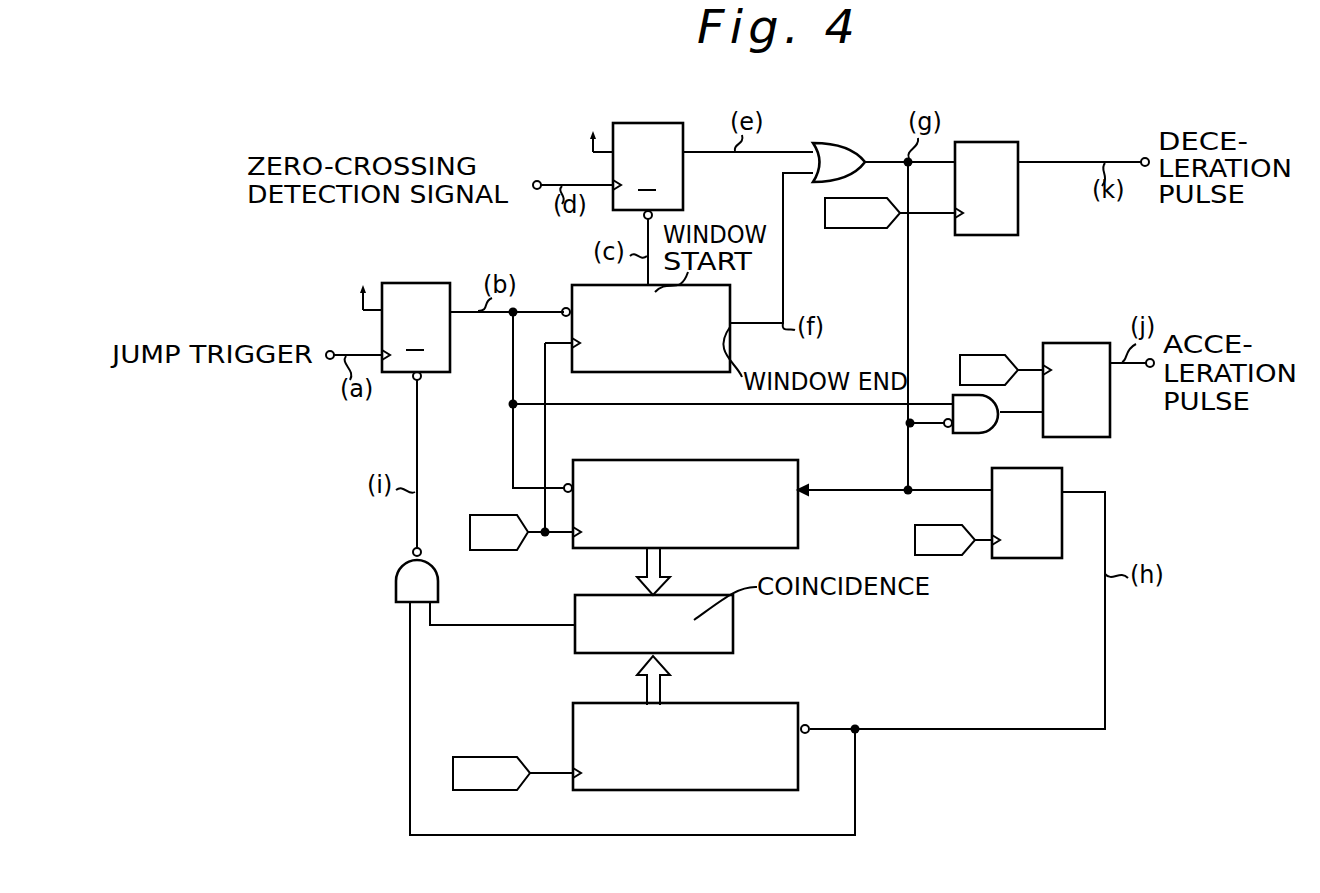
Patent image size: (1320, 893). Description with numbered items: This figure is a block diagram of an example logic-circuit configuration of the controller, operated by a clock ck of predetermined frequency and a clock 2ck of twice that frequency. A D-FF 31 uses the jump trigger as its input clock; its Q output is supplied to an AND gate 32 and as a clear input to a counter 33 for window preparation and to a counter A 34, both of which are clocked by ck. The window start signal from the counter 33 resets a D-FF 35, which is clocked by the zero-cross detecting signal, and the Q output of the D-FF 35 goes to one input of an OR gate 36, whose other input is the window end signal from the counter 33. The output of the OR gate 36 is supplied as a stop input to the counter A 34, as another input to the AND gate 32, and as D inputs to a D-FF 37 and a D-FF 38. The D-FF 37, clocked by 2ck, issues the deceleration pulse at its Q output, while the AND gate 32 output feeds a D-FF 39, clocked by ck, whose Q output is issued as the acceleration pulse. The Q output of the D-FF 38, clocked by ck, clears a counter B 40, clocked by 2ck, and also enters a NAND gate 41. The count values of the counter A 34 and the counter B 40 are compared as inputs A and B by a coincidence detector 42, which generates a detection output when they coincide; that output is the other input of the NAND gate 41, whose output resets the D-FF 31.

The D-FF 31 is at (410, 283).
The AND gate 32 is at (966, 433).
The counter for window preparation 33 is at (744, 288).
The counter A 34 is at (728, 460).
The D-FF 35 is at (650, 123).
The OR gate 36 is at (836, 143).
The D-FF 37 is at (1000, 142).
The D-FF 38 is at (1062, 470).
The D-FF 39 is at (1066, 343).
The counter B 40 is at (798, 777).
The NAND gate 41 is at (438, 585).
The coincidence detector 42 is at (733, 638).